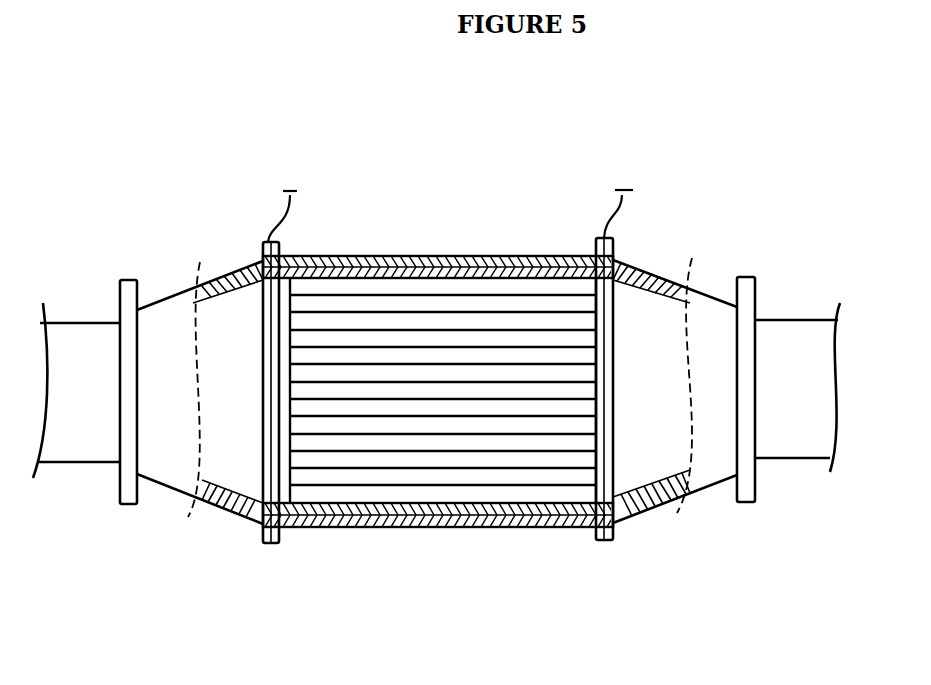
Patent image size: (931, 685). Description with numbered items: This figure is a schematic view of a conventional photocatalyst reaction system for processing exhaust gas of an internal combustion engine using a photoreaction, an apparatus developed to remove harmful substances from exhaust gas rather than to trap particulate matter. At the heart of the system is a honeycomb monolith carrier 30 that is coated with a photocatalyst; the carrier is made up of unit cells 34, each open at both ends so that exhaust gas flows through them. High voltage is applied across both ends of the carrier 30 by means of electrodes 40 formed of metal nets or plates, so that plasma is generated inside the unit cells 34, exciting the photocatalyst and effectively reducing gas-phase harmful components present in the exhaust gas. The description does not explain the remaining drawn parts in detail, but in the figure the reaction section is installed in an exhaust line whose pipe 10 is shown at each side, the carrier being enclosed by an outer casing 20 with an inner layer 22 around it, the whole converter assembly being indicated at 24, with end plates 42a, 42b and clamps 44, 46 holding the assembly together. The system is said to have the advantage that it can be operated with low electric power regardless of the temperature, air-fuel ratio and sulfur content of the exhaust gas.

The exhaust pipe 10 is at (78, 463).
The outer shell 20 is at (358, 257).
The insulating layer 22 is at (398, 263).
The catalytic converter module 24 is at (624, 340).
The honeycomb monolith carrier 30 is at (447, 293).
The unit cells 34 is at (443, 482).
The electrodes 40 is at (613, 408).
The first end plate 42a is at (270, 348).
The second end plate 42b is at (598, 482).
The clamp 44 is at (623, 205).
The clamp 46 is at (265, 240).